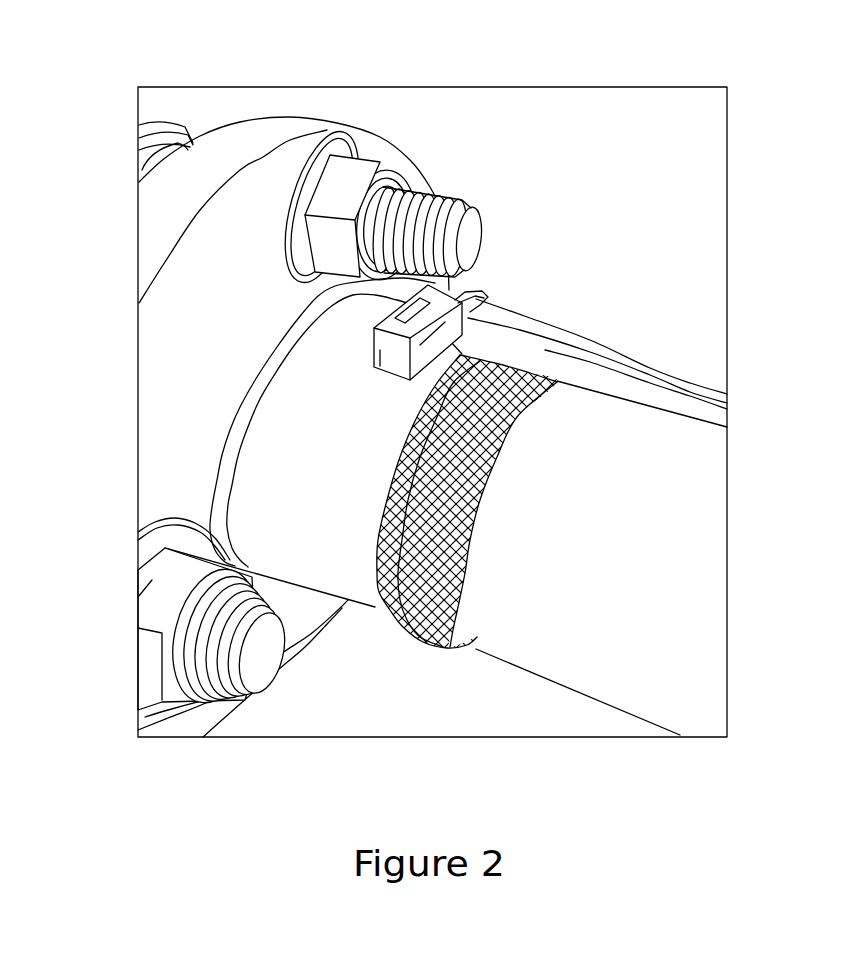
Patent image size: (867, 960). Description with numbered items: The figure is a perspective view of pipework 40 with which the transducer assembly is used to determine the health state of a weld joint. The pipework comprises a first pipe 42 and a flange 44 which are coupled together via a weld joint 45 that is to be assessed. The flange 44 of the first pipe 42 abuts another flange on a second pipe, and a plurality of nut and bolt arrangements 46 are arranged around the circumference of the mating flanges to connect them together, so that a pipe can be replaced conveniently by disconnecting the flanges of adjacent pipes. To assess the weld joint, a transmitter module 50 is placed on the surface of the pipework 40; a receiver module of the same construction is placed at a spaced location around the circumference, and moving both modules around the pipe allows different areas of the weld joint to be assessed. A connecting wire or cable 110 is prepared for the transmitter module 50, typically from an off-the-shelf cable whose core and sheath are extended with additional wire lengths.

The pipework 40 is at (583, 271).
The first pipe 42 is at (624, 518).
The flange 44 is at (307, 427).
The weld joint 45 is at (450, 577).
The nut and bolt arrangements 46 is at (337, 186).
The transmitter module 50 is at (512, 283).
The connecting wire or cable 110 is at (592, 338).